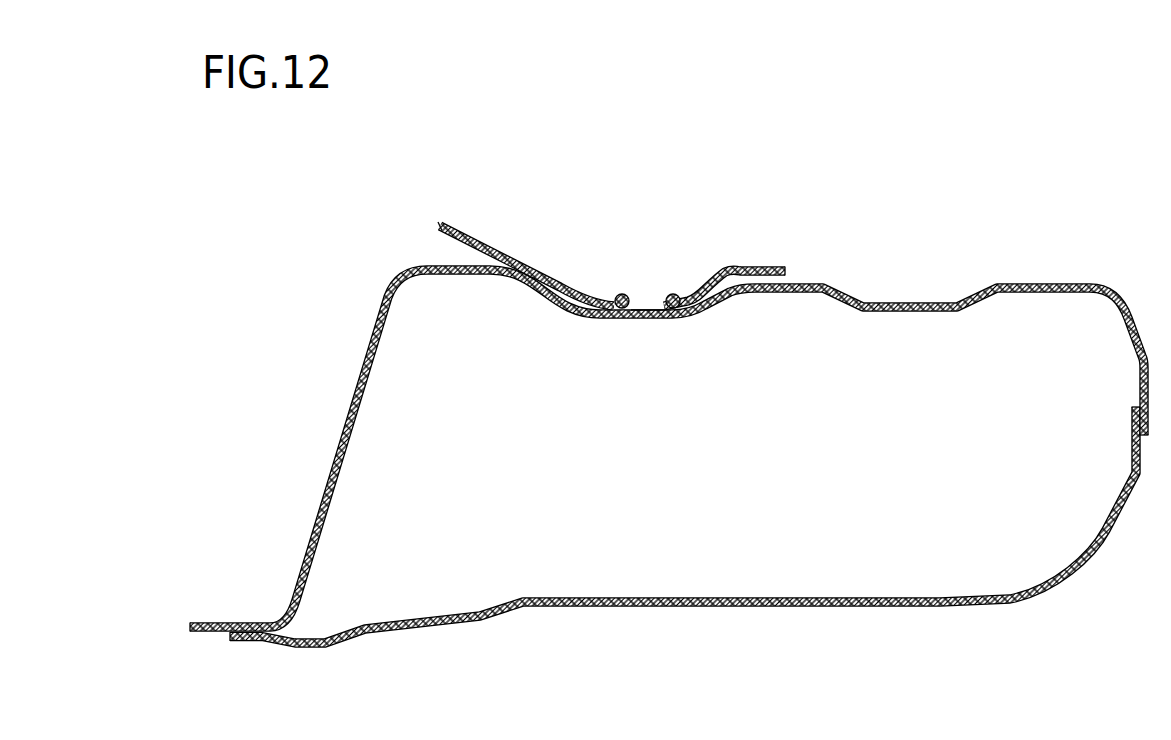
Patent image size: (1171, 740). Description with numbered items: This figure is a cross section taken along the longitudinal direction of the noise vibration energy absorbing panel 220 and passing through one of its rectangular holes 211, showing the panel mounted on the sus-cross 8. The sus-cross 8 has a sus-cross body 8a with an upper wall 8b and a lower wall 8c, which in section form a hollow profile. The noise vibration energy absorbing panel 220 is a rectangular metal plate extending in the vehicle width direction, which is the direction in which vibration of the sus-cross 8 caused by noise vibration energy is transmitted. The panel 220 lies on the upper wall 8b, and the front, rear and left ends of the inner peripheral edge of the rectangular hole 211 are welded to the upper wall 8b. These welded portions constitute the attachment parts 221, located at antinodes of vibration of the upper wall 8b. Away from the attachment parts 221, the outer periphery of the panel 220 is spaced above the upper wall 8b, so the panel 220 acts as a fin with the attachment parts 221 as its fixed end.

The sus-cross 8 is at (669, 405).
The sus-cross body 8a is at (669, 405).
The upper wall 8b is at (908, 302).
The lower wall 8c is at (783, 607).
The rectangular hole 211 is at (650, 299).
The noise vibration energy absorbing panel 220 is at (753, 266).
The attachment parts 221 is at (625, 320).